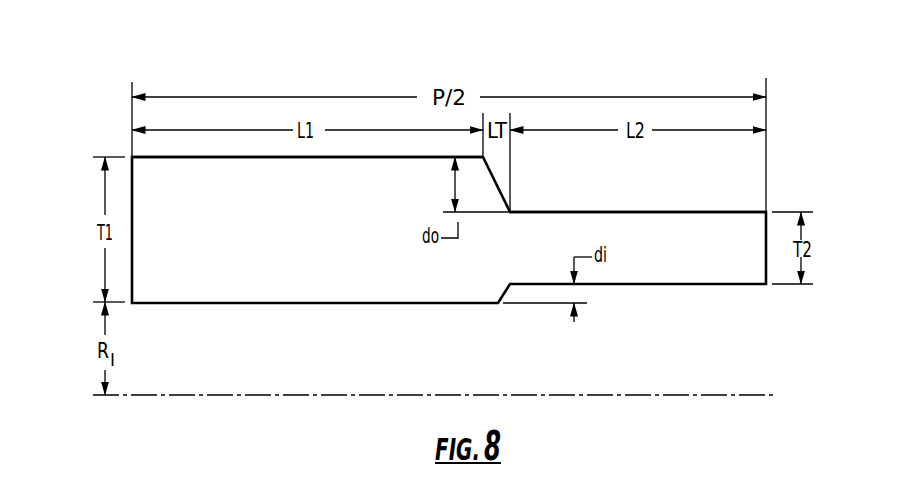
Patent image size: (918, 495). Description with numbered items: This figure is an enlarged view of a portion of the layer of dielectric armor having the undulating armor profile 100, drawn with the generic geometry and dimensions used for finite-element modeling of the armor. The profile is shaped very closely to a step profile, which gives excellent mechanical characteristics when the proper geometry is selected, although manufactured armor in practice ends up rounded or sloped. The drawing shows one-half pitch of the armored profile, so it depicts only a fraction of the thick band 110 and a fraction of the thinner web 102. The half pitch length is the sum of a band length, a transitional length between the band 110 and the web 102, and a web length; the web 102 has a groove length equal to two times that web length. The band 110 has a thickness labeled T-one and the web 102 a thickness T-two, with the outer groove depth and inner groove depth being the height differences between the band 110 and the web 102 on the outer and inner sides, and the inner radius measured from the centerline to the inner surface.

The thread profile / threaded member 100 is at (545, 162).
The web 102 is at (600, 212).
The band 110 is at (202, 157).